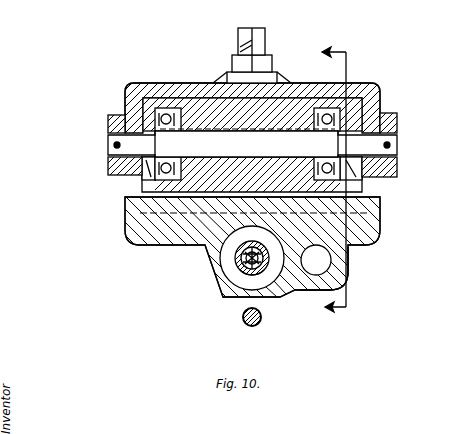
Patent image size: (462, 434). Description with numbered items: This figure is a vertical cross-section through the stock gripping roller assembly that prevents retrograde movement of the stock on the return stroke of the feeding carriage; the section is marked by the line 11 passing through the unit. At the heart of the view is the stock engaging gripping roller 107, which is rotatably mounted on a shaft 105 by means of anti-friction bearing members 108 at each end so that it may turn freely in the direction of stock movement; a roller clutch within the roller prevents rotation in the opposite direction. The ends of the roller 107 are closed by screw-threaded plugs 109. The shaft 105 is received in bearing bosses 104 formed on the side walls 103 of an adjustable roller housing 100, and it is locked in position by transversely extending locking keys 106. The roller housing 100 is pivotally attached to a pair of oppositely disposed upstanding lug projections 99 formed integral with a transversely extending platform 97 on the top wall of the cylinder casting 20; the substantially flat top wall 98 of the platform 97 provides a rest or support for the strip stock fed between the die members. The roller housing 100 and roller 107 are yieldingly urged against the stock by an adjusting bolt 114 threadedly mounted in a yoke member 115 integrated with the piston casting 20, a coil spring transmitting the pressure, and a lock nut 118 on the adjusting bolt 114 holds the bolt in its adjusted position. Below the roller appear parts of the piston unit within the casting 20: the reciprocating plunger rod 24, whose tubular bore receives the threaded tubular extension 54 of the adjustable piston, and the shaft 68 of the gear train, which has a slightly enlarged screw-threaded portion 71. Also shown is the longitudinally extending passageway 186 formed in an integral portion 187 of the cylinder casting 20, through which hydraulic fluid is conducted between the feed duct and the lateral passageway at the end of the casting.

The section line 11- 11 is at (338, 181).
The cylinder casting 20 is at (205, 265).
The reciprocating plunger rod 24 is at (243, 259).
The threaded tubular extension 54 is at (247, 263).
The shaft 68 is at (249, 277).
The screw-threaded portion 71 is at (243, 320).
The platform 97 is at (162, 240).
The top wall 98 is at (134, 243).
The upstanding lug projections 99 is at (142, 176).
The roller housing 100 is at (360, 83).
The side walls 103 is at (128, 100).
The bearing bosses 104 is at (110, 128).
The shaft 105 is at (252, 143).
The locking keys 106 is at (114, 146).
The stock engaging gripping roller 107 is at (203, 110).
The anti-friction bearing members 108 is at (164, 114).
The screw-threaded plugs 109 is at (143, 176).
The adjusting bolt 114 is at (265, 37).
The yoke member 115 is at (268, 78).
The lock nut 118 is at (260, 62).
The longitudinally extending passageway 186 is at (320, 260).
The integral portion 187 is at (343, 283).